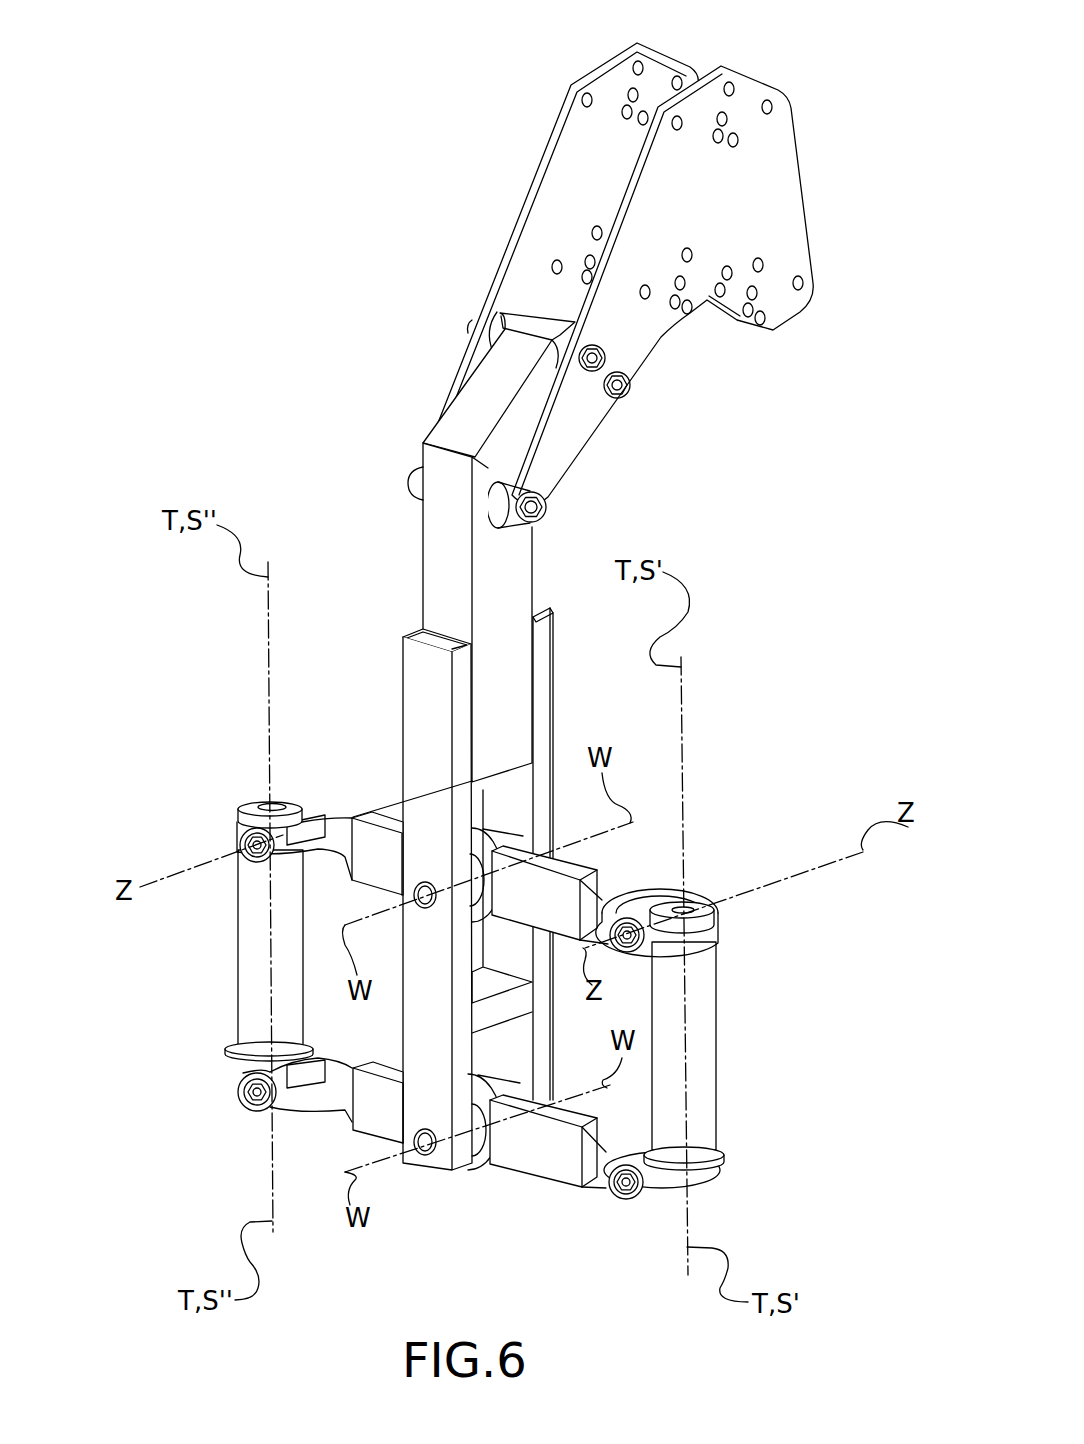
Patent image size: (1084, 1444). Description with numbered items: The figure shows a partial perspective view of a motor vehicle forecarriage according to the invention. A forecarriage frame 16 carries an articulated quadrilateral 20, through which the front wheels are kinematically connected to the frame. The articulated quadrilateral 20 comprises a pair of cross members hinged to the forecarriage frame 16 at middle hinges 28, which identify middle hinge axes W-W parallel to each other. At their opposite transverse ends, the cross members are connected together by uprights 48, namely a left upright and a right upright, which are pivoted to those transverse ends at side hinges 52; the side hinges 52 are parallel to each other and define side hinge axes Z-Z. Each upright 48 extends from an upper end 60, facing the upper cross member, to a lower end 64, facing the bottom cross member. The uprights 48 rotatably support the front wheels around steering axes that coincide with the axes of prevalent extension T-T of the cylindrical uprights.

The forecarriage frame 16 is at (433, 183).
The middle hinges 28 is at (430, 838).
The articulated quadrilateral 20 is at (612, 857).
The upper end 60 is at (212, 797).
The side hinges 52 is at (240, 843).
The uprights 48 is at (257, 950).
The lower end 64 is at (218, 1073).